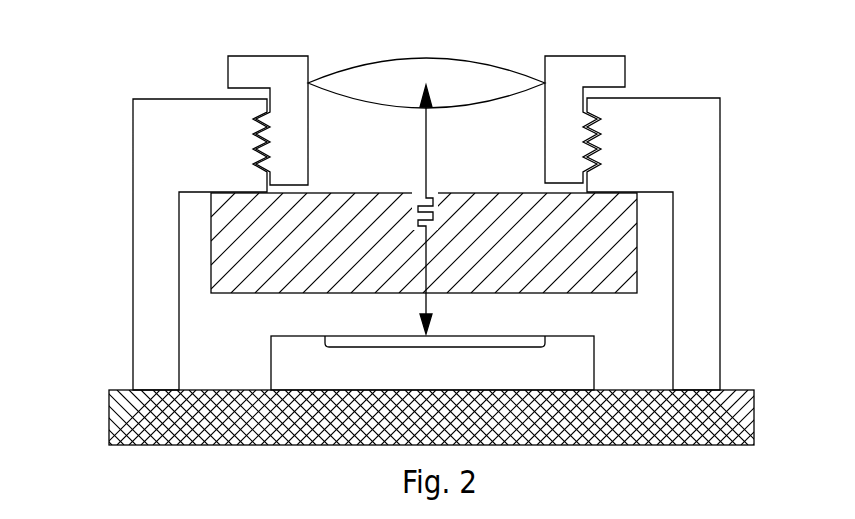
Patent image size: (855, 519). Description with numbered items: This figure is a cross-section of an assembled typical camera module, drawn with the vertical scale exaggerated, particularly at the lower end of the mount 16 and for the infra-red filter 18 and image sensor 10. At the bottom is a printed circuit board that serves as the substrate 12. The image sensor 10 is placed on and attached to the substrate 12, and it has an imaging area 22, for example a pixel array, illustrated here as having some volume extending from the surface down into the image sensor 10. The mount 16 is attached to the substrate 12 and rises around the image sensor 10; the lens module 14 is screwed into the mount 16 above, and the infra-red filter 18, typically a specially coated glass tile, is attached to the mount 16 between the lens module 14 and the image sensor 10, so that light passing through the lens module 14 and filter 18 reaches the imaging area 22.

The image sensor 10 is at (573, 362).
The substrate 12 is at (665, 444).
The lens module 14 is at (567, 69).
The mount 16 is at (166, 155).
The infra-red filter 18 is at (633, 237).
The imaging area 22 is at (342, 336).